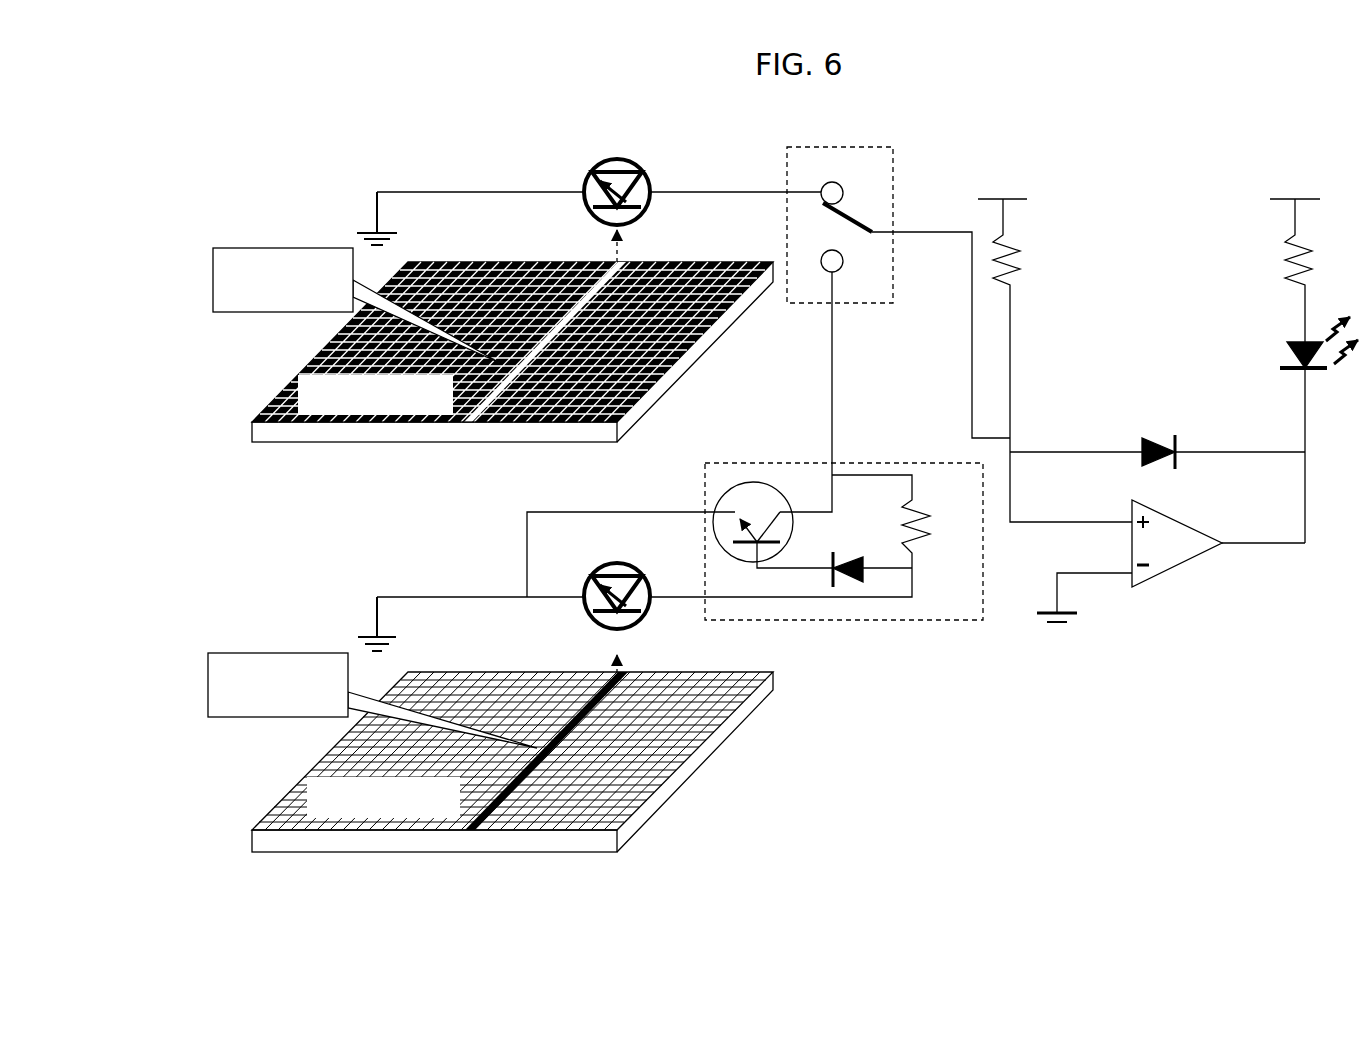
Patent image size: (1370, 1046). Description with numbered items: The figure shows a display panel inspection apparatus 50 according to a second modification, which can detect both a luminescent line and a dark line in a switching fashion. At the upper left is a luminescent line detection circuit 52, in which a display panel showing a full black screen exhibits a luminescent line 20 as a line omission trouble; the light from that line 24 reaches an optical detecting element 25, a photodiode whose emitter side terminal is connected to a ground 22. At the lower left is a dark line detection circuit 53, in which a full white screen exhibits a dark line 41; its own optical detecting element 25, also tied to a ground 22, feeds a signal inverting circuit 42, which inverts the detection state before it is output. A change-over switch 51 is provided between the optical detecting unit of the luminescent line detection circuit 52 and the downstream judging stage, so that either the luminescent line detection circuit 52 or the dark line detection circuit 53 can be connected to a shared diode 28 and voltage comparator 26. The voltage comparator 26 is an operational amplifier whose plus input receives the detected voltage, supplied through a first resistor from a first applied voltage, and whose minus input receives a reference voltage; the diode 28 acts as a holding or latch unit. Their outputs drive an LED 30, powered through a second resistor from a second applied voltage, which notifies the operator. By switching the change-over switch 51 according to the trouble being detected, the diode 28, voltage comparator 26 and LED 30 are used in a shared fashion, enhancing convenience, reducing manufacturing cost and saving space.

The display panel inspection apparatus 50 is at (1086, 180).
The change-over switch 51 is at (840, 143).
The luminescent line detection circuit 52 is at (314, 158).
The dark line detection circuit 53 is at (350, 586).
The ground 22 is at (353, 233).
The optical detecting element 25 is at (590, 212).
The light from luminescent line 24 is at (637, 246).
The luminescent line 20 is at (470, 413).
The dark line 41 is at (473, 832).
The signal inverting circuit 42 is at (846, 630).
The diode 28 is at (1175, 435).
The LED 30 is at (1287, 342).
The voltage comparator 26 is at (1173, 565).